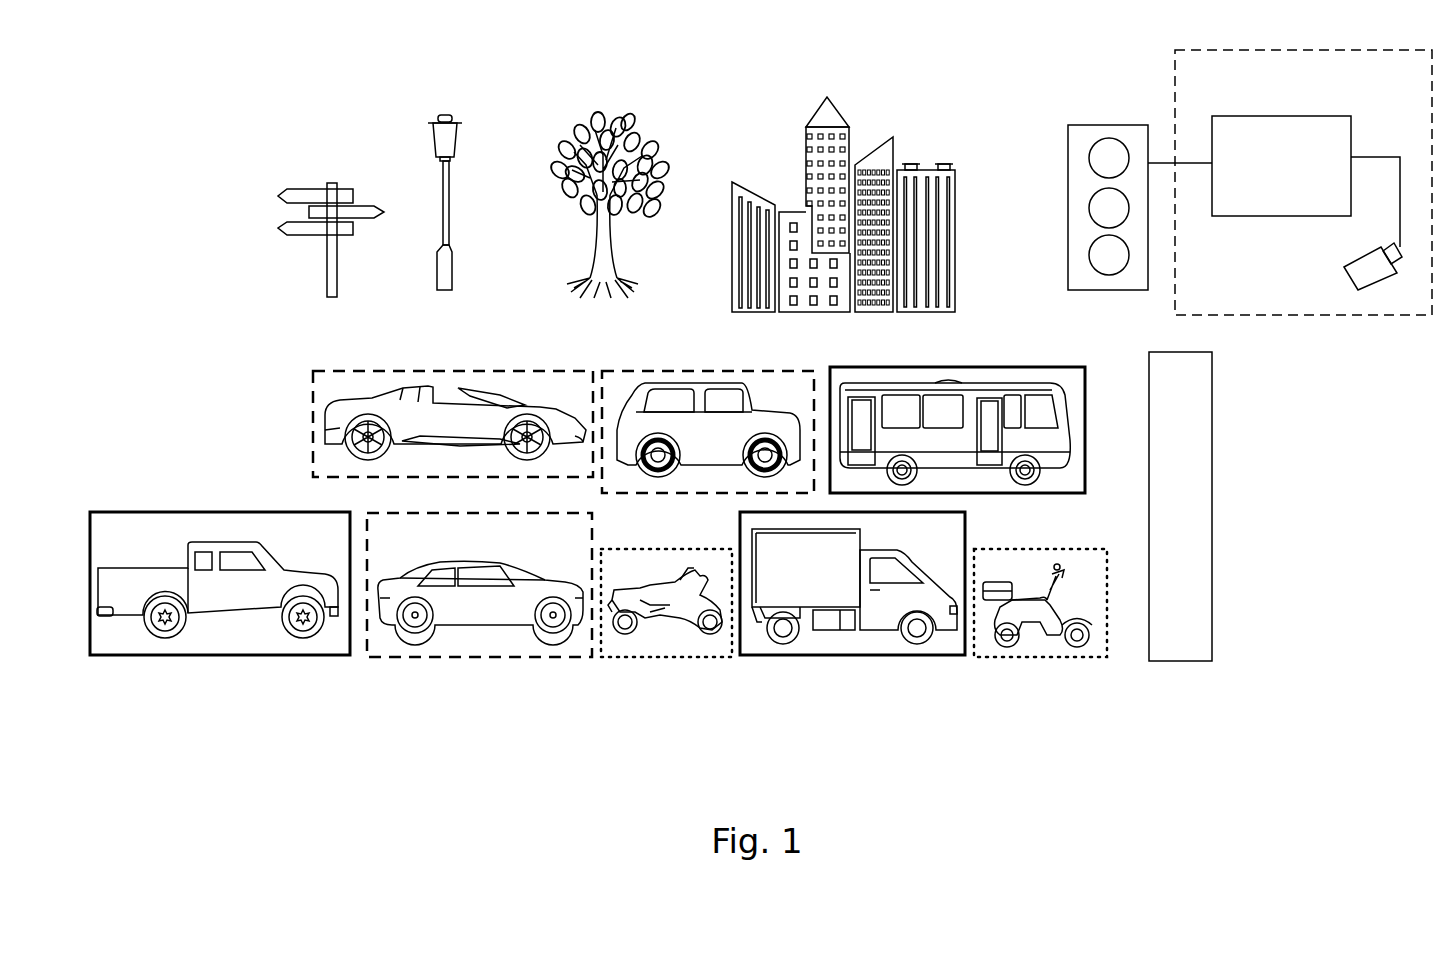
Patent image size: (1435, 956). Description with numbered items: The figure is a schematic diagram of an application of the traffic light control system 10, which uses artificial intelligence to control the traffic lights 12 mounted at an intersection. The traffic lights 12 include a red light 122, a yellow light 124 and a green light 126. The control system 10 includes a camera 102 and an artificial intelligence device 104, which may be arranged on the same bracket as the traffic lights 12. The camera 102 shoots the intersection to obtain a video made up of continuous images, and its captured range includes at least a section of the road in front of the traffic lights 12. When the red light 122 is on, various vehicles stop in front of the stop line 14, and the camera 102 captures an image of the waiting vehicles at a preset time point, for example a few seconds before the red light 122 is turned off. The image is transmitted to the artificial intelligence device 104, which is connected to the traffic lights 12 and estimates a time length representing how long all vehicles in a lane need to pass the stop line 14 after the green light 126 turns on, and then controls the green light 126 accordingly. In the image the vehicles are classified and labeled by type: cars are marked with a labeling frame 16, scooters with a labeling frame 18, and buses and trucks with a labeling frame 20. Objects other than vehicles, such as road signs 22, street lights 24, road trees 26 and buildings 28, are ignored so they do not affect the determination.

The control system 10 is at (1311, 50).
The artificial intelligence device 104 is at (1278, 116).
The camera 102 is at (1362, 253).
The traffic lights 12 is at (1106, 125).
The red light 122 is at (1092, 158).
The yellow light 124 is at (1100, 208).
The green light 126 is at (1105, 260).
The stop line 14 is at (1206, 492).
The labeling frame 16 is at (313, 423).
The labeling frame 18 is at (680, 658).
The labeling frame 20 is at (970, 367).
The road signs 22 is at (330, 183).
The street lights 24 is at (446, 115).
The road trees 26 is at (602, 117).
The buildings 28 is at (833, 108).